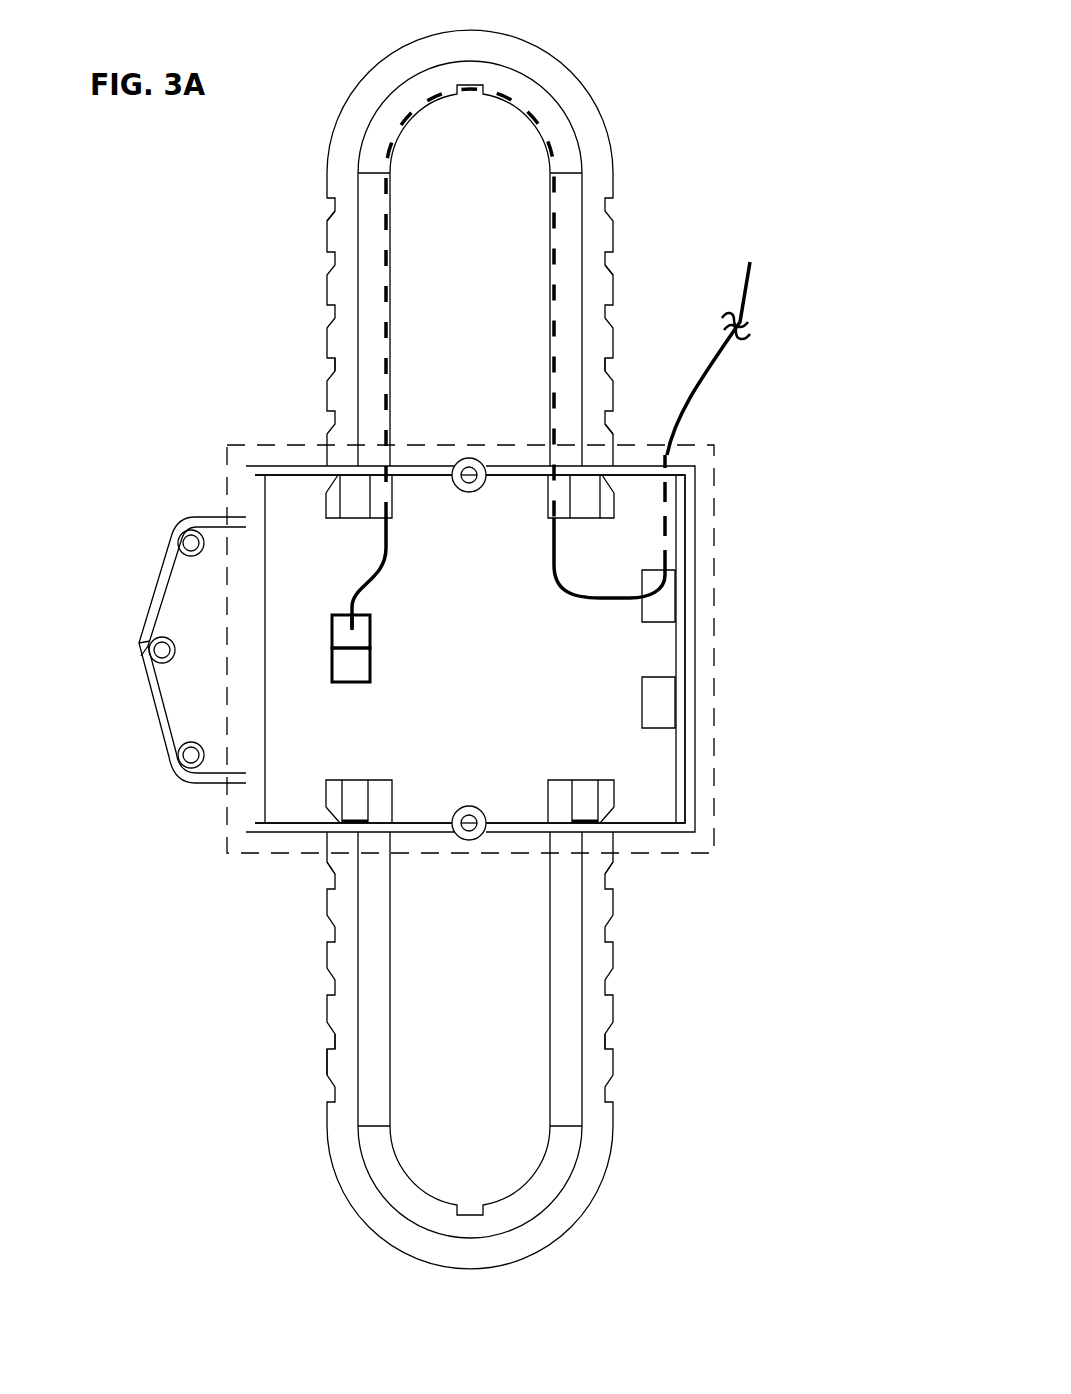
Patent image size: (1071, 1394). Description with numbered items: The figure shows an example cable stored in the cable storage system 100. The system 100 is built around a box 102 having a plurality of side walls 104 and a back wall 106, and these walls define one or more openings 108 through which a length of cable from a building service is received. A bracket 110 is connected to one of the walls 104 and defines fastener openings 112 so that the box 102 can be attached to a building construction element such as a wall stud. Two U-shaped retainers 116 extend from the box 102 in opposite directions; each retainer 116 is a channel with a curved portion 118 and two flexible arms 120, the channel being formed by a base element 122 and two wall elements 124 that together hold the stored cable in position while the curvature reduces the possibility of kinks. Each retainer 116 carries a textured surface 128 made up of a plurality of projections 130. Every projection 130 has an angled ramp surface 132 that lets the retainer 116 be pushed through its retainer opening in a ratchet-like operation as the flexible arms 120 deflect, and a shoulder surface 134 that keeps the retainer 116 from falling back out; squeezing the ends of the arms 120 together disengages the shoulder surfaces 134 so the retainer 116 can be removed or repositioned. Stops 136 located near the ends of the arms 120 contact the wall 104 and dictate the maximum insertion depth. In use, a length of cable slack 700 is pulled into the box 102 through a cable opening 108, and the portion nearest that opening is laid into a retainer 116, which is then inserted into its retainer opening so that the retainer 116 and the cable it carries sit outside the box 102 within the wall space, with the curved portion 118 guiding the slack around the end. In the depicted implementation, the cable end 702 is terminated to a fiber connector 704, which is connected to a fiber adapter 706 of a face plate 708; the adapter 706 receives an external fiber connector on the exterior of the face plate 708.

The cable storage system 100 is at (715, 145).
The box 102 is at (752, 490).
The side walls 104 is at (665, 462).
The back wall 106 is at (472, 656).
The openings 108 is at (648, 616).
The bracket 110 is at (182, 695).
The fastener openings 112 is at (162, 650).
The retainer 116 is at (642, 113).
The curved portion 118 is at (467, 32).
The flexible arms 120 is at (377, 418).
The base element 122 is at (494, 100).
The wall elements 124 is at (552, 70).
The textured surface 128 is at (628, 290).
The projections 130 is at (605, 233).
The angled ramp surface 132 is at (612, 367).
The shoulder surfaces 134 is at (325, 204).
The stops 136 is at (357, 507).
The length of cable slack 700 is at (386, 185).
The cable end 702 is at (345, 606).
The fiber connector 704 is at (363, 638).
The fiber adapter 706 is at (363, 670).
The face plate 708 is at (715, 780).